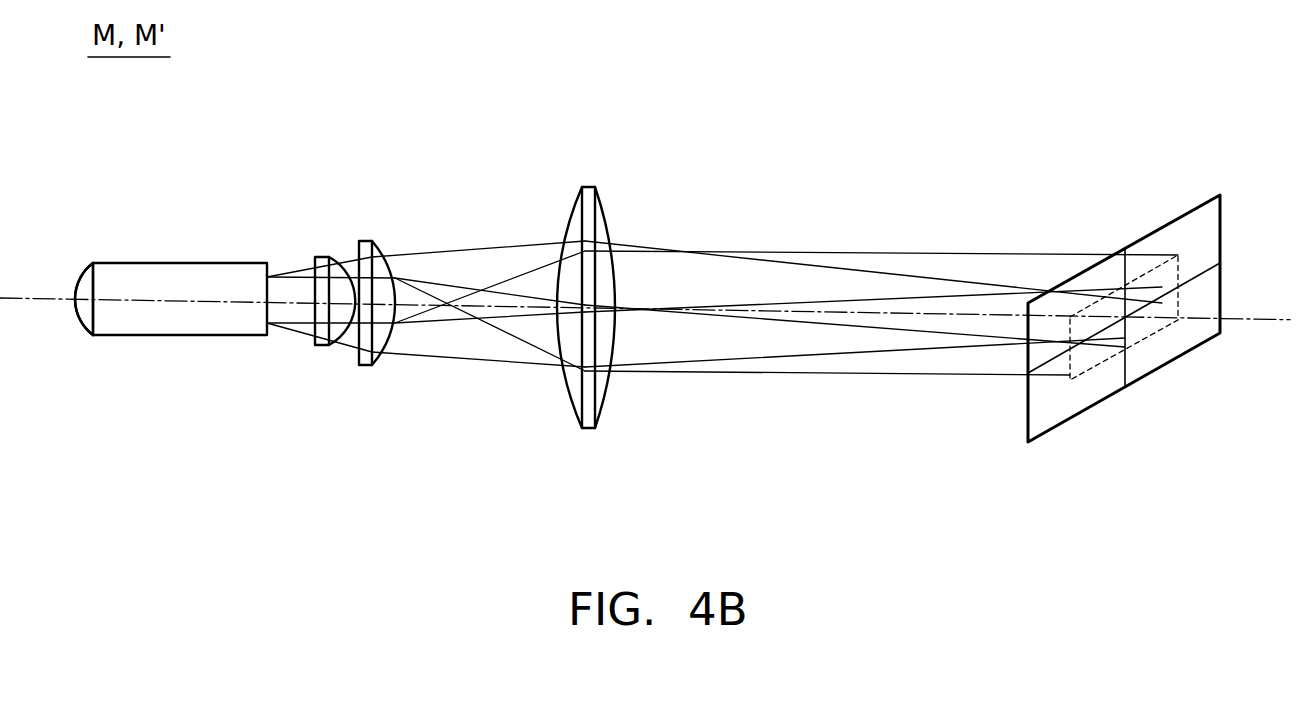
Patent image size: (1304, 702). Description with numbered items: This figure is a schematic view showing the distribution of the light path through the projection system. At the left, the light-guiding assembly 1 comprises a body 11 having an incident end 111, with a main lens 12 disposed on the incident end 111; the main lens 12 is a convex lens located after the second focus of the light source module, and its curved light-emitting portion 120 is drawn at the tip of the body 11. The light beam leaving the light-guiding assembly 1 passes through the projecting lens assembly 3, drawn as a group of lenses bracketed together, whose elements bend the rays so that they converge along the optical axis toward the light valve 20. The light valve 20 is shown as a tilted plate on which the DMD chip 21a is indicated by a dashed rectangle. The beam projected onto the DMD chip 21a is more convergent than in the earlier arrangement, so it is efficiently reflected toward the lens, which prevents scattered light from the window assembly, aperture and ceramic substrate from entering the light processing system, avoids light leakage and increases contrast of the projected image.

The light-guiding assembly 1 is at (148, 336).
The body 11 is at (177, 338).
The main lens 12 is at (80, 333).
The light emitting surface of lens 120 is at (80, 268).
The incident end 111 is at (90, 287).
The projecting lens assembly 3 is at (615, 440).
The light valve 20 is at (1191, 210).
The DMD chip 21a is at (1158, 328).